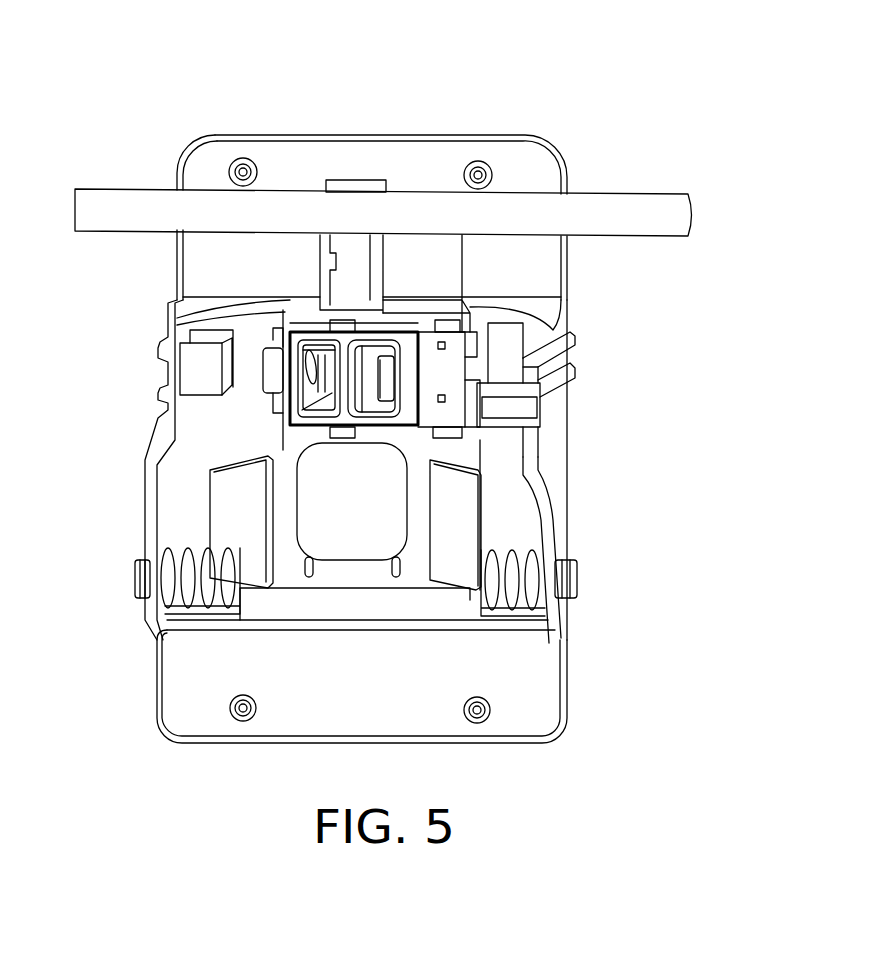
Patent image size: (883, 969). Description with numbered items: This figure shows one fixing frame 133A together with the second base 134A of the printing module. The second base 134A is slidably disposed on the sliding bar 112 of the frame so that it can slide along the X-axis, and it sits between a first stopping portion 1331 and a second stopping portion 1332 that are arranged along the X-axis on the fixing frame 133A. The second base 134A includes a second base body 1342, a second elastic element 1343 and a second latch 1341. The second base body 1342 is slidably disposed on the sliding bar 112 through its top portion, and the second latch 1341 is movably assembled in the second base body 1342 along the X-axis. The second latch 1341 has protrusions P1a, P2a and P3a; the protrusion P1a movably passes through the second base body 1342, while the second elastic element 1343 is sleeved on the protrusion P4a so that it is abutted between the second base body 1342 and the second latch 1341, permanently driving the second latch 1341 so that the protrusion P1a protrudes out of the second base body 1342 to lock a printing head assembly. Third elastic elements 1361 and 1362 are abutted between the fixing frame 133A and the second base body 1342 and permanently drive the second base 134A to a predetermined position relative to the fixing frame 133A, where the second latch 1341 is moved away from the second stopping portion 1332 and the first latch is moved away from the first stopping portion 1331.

The sliding bar 112 is at (626, 212).
The fixing frame 133A is at (497, 140).
The second base 134A is at (786, 50).
The second latch 1341 is at (403, 355).
The second base body 1342 is at (415, 305).
The second elastic element 1343 is at (322, 338).
The first stopping portion 1331 is at (508, 382).
The second stopping portion 1332 is at (193, 370).
The third elastic element 1361 is at (195, 553).
The third elastic element 1362 is at (518, 553).
The protrusion P1a is at (265, 375).
The protrusion P2a is at (332, 392).
The protrusion P3a is at (390, 392).
The protrusion P4a is at (300, 357).